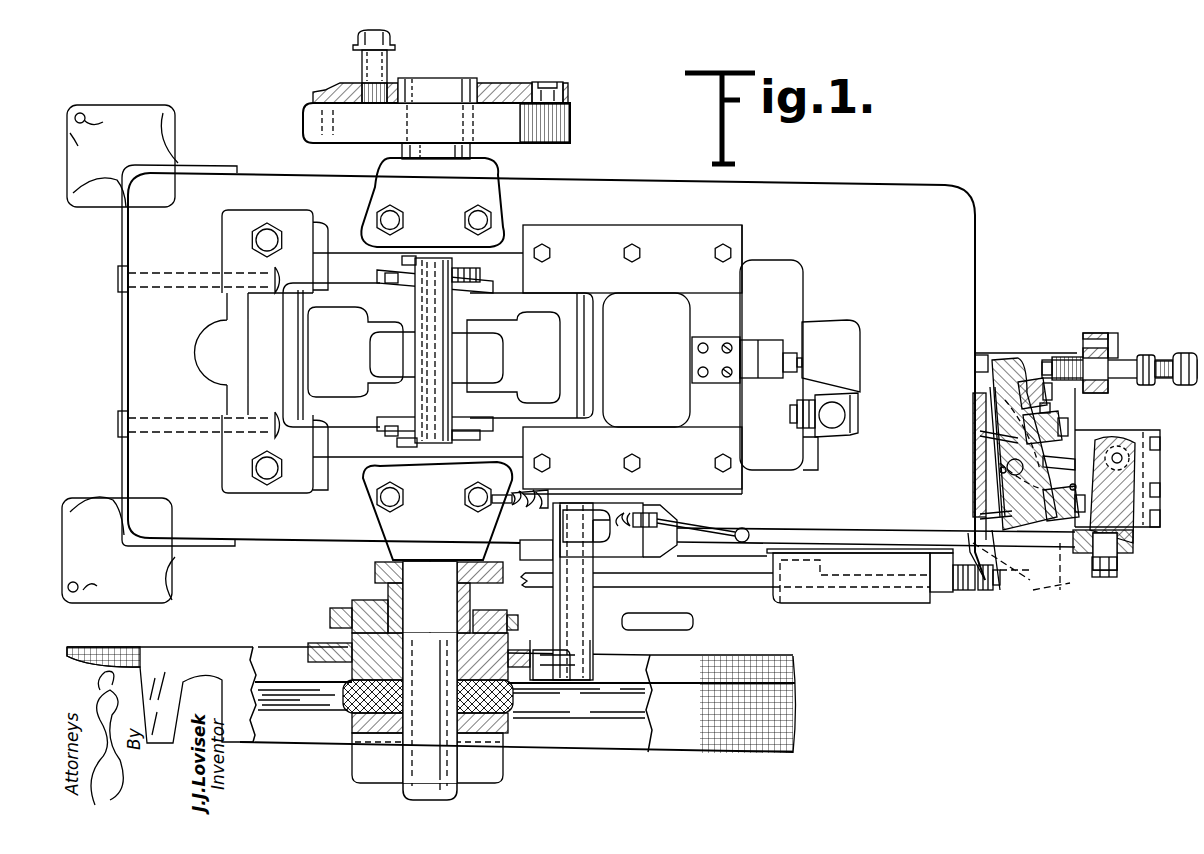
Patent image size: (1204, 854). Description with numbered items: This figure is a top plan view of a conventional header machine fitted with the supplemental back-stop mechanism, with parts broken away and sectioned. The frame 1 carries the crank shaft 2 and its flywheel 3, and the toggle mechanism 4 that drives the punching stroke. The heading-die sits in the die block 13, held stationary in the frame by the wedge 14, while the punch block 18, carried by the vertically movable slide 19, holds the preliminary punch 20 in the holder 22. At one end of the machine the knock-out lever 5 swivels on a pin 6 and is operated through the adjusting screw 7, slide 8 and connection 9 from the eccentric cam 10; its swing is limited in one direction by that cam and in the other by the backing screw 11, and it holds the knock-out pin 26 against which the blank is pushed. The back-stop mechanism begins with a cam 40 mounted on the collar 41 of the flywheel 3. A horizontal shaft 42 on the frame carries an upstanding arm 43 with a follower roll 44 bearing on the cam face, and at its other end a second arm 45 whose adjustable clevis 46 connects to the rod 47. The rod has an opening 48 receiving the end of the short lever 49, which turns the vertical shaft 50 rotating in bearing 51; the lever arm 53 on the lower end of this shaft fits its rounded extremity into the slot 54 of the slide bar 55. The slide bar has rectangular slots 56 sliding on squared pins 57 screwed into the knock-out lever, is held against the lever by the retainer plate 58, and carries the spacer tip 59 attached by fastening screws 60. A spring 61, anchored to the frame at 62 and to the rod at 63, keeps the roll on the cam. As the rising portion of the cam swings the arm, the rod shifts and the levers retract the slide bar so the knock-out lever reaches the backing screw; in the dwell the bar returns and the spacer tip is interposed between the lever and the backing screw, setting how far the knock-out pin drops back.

The frame 1 is at (658, 184).
The crank shaft 2 is at (432, 92).
The flywheel 3 is at (742, 668).
The toggle mechanism 4 is at (352, 303).
The knock-out lever 5 is at (975, 410).
The pin 6 is at (1007, 466).
The adjusting screw 7 is at (996, 586).
The slide 8 is at (936, 578).
The connection 9 is at (540, 588).
The eccentric cam 10 is at (375, 573).
The backing screw 11 is at (1070, 358).
The die block 13 is at (850, 352).
The wedge 14 is at (812, 392).
The punch block 18 is at (690, 420).
The slide 19 is at (718, 342).
The preliminary punch 20 is at (802, 364).
The holder 22 is at (788, 352).
The knock-out pin 26 is at (983, 355).
The cam 40 is at (310, 650).
The collar 41 is at (352, 620).
The horizontal shaft 42 is at (595, 608).
The upstanding arm 43 is at (572, 645).
The follower roll 44 is at (557, 655).
The second arm 45 is at (593, 530).
The adjustable clevis 46 is at (657, 558).
The rod 47 is at (858, 522).
The opening 48 is at (1133, 545).
The short lever 49 is at (1112, 503).
The vertical shaft 50 is at (1122, 455).
The bearing 51 is at (1153, 458).
The lever arm 53 is at (1080, 458).
The slot 54 is at (1001, 471).
The slide bar 55 is at (1048, 405).
The rectangular slots 56 is at (1054, 466).
The squared pins 57 is at (980, 433).
The retainer plate 58 is at (1084, 478).
The spacer tip 59 is at (1020, 363).
The fastening screws 60 is at (1035, 387).
The spring 61 is at (525, 506).
The frame connection of spring 62 is at (465, 505).
The rod connection of spring 63 is at (752, 524).